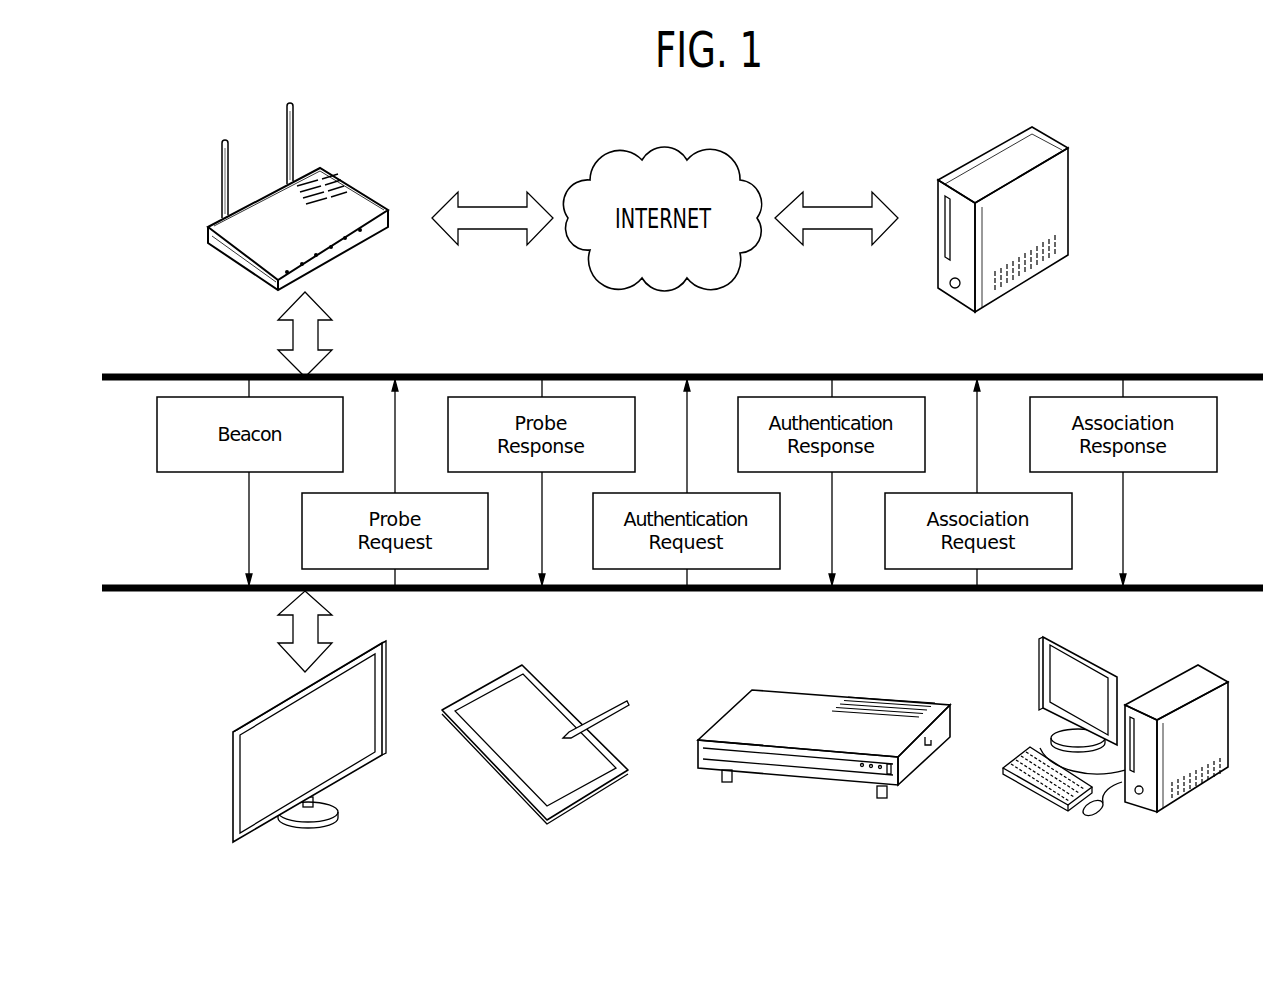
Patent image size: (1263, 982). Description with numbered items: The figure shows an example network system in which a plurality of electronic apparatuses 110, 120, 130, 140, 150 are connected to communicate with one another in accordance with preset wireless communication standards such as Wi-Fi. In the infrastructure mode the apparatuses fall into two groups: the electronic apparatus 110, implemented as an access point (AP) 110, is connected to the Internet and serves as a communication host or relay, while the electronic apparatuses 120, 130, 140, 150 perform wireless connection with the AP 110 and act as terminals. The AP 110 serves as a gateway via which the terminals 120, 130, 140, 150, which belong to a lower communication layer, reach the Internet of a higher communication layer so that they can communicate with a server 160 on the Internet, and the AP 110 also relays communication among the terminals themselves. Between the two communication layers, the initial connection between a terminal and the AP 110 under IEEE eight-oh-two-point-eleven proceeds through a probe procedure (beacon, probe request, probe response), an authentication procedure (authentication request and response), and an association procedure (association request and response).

The access point 110 is at (365, 175).
The electronic apparatus 120 is at (362, 808).
The electronic apparatus 130 is at (595, 810).
The electronic apparatus 140 is at (892, 808).
The electronic apparatus 150 is at (1198, 810).
The server 160 is at (947, 158).